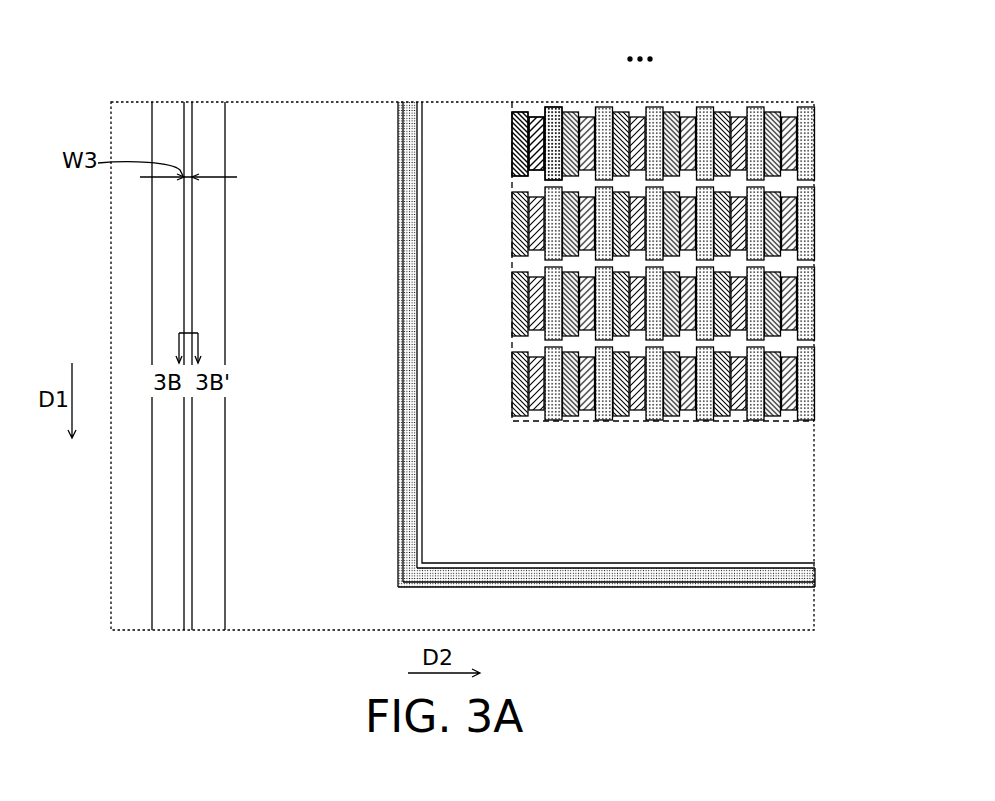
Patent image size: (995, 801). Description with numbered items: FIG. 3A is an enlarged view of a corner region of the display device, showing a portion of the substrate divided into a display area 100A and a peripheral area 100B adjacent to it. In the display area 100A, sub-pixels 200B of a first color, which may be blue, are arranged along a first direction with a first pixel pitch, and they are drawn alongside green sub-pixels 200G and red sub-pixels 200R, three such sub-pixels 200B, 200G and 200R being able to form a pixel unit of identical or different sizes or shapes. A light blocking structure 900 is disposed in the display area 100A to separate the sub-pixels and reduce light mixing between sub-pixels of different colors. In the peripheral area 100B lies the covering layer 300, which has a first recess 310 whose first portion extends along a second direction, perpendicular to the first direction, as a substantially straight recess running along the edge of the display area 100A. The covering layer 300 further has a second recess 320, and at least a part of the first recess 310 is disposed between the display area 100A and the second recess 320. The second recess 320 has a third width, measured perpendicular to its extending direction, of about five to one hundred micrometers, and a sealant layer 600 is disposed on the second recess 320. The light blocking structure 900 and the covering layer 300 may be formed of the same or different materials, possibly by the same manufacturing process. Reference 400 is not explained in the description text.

The display area 100A is at (758, 423).
The peripheral area 100B is at (328, 101).
The sub-pixels 200B is at (521, 112).
The sub-pixels 200G is at (540, 116).
The sub-pixels 200R is at (558, 110).
The covering layer 300 is at (455, 122).
The first recess 310 is at (398, 148).
The second recess 320 is at (184, 120).
The sealing member 400 is at (790, 588).
The sealant layer 600 is at (226, 528).
The light blocking structure 900 is at (798, 184).